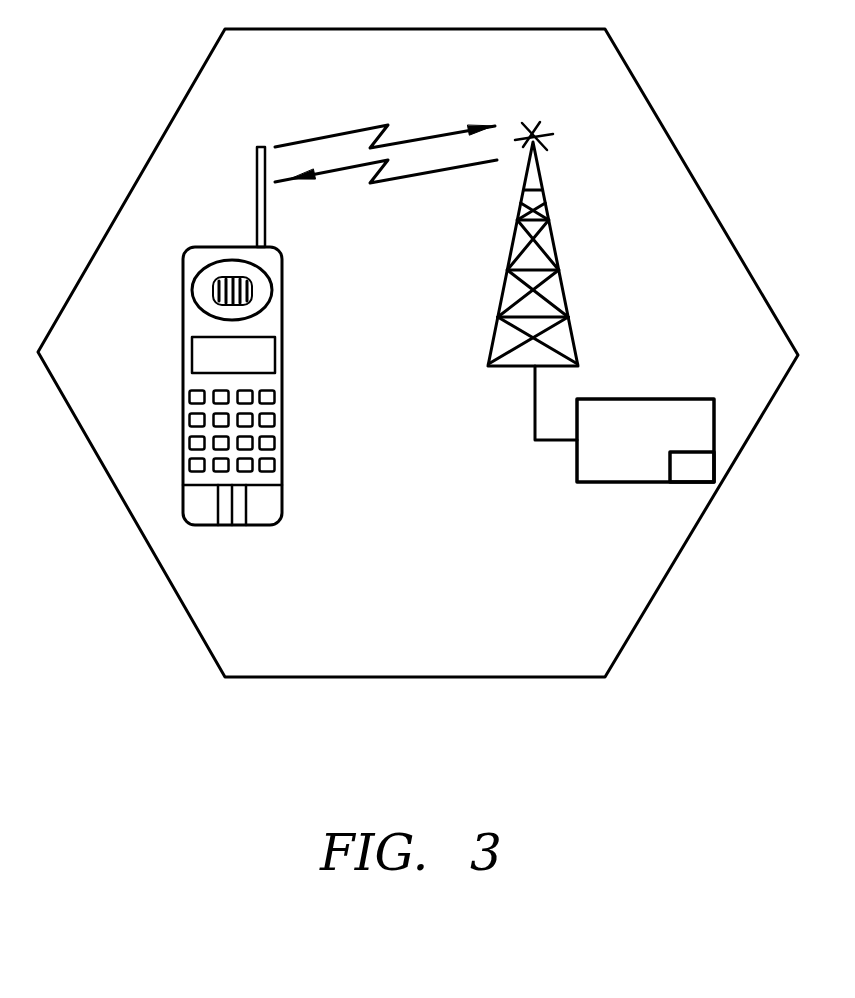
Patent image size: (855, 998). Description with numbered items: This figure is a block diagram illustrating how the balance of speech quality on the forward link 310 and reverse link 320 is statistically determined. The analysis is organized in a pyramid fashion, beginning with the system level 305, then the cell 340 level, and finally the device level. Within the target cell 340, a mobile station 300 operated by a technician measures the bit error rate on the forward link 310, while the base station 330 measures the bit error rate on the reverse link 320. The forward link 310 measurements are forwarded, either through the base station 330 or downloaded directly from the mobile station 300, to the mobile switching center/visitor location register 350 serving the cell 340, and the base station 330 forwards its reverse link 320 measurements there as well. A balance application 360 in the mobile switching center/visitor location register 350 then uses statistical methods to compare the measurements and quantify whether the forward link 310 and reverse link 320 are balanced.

The mobile station 300 is at (282, 337).
The system level 305 is at (200, 723).
The forward link 310 is at (418, 177).
The reverse link 320 is at (357, 130).
The base station 330 is at (507, 270).
The cell 340 is at (418, 353).
The mobile switching center/visitor location register 350 is at (625, 398).
The balance application 360 is at (692, 468).